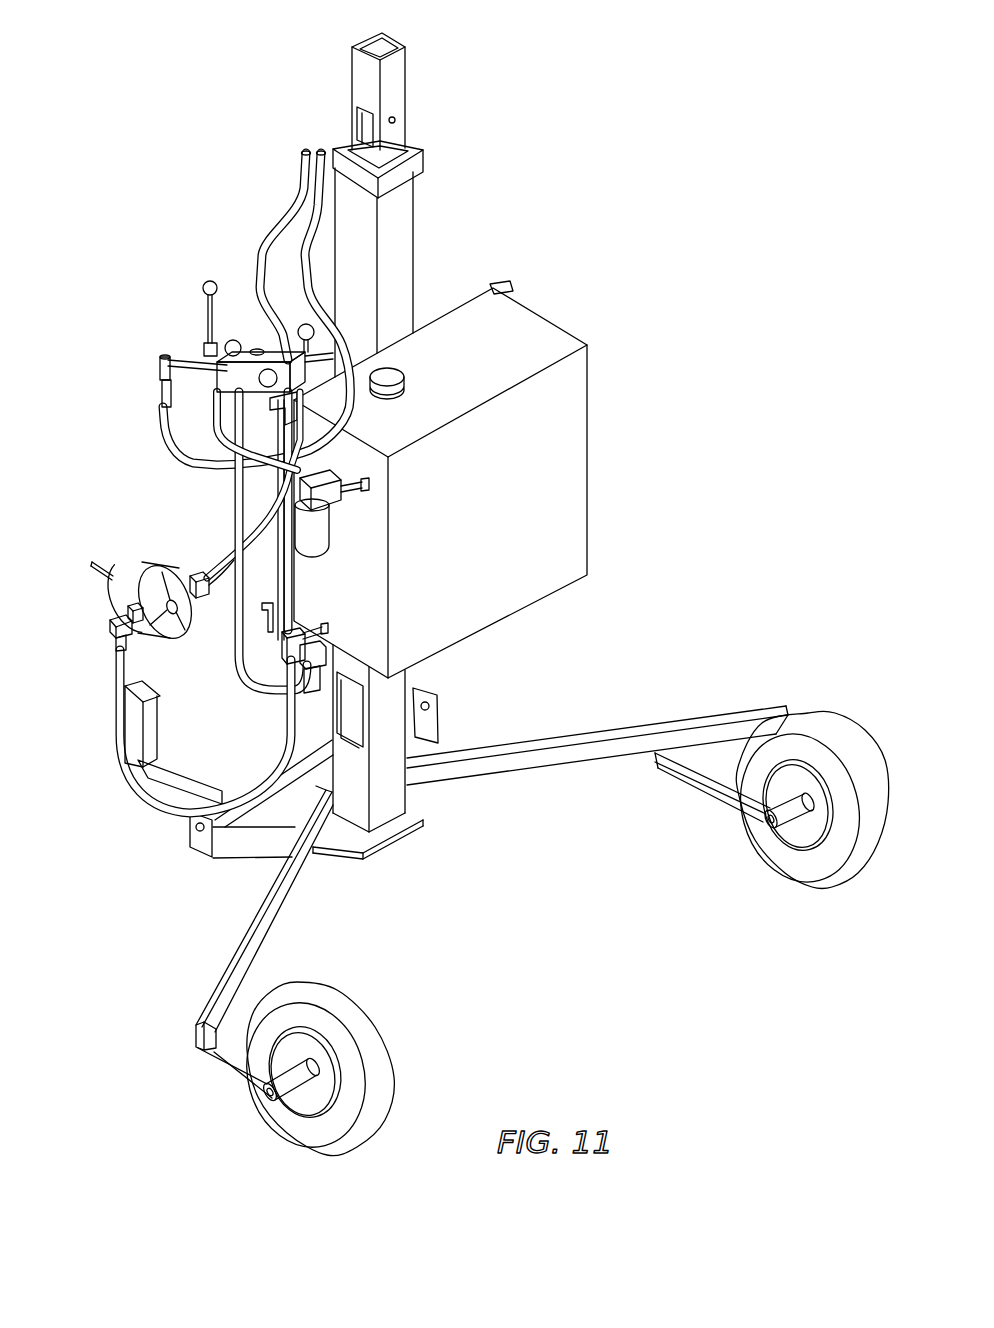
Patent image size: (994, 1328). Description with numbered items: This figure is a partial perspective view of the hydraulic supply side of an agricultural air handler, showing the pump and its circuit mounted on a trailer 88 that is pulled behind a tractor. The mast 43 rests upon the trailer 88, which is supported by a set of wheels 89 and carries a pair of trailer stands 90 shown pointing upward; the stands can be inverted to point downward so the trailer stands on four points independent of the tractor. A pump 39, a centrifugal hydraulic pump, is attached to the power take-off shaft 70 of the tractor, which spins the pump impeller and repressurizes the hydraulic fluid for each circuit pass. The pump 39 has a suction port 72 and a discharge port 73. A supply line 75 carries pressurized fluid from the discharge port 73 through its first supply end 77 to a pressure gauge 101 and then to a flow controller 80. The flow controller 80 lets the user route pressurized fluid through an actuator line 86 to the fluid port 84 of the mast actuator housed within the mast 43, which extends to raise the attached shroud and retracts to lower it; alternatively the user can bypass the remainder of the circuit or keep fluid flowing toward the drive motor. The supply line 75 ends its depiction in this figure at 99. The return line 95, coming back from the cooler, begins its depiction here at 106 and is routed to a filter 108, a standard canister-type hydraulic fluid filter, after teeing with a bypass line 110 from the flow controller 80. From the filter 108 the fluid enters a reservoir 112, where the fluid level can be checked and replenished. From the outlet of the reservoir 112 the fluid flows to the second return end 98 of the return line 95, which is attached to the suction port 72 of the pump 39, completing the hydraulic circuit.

The pump 39 is at (145, 575).
The mast 43 is at (402, 213).
The power take-off shaft 70 is at (96, 565).
The suction port 72 is at (138, 622).
The discharge port 73 is at (204, 596).
The supply line 75 is at (268, 252).
The first supply end 77 is at (213, 573).
The flow controller 80 is at (233, 345).
The fluid port 84 is at (317, 653).
The actuator line 86 is at (257, 650).
The trailer 88 is at (422, 735).
The wheels 89 is at (813, 735).
The trailer stands 90 is at (150, 750).
The return line 95 is at (216, 430).
The second return end 98 is at (115, 660).
The supply line depiction end 99 is at (302, 160).
The pressure gauge 101 is at (307, 325).
The return line depiction start 106 is at (322, 150).
The filter 108 is at (313, 538).
The bypass line 110 is at (200, 370).
The reservoir 112 is at (571, 384).